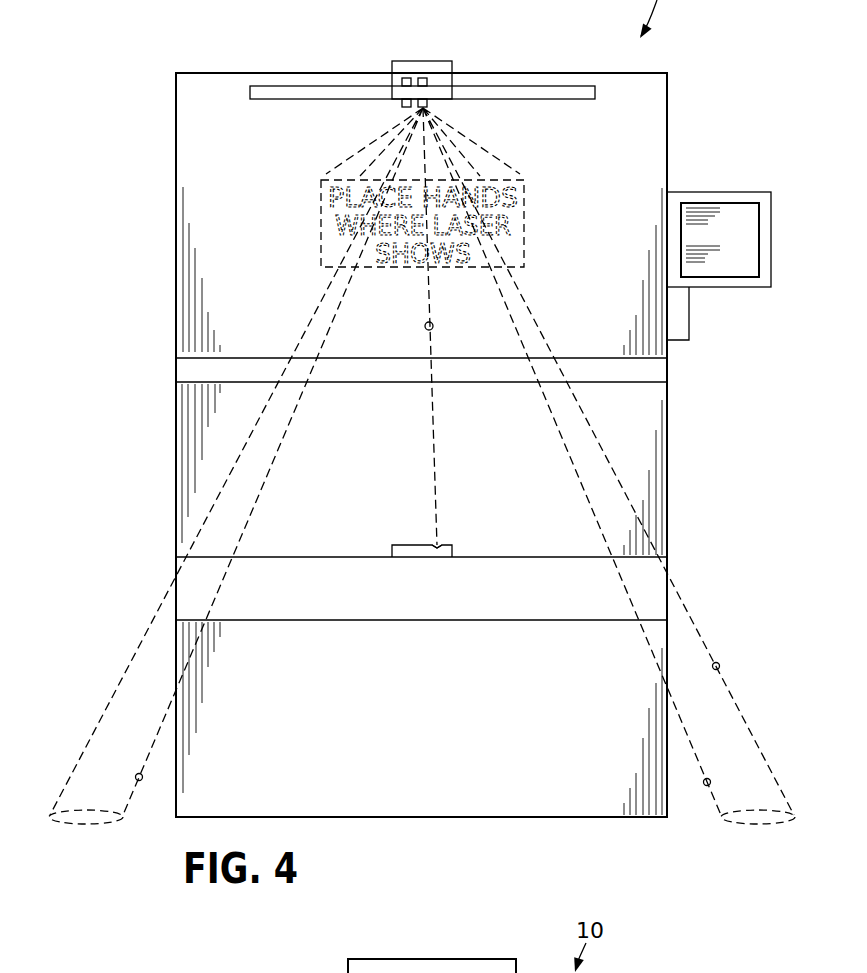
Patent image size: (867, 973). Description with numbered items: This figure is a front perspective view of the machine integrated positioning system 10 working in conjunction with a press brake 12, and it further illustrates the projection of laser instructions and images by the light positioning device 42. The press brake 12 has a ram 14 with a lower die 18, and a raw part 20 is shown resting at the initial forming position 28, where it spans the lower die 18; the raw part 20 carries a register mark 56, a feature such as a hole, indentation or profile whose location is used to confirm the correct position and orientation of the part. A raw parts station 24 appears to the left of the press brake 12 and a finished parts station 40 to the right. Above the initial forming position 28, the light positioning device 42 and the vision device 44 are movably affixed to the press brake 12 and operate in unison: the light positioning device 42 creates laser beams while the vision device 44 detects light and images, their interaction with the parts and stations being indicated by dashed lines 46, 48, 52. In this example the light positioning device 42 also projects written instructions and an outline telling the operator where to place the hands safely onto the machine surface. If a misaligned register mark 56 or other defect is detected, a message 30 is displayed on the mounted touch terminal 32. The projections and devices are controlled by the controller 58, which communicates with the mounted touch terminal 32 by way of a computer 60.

The machine integrated positioning system 10 is at (622, 388).
The press brake 12 is at (668, 82).
The ram 14 is at (176, 167).
The lower die 18 is at (570, 556).
The raw part 20 is at (404, 545).
The raw parts station 24 is at (93, 787).
The initial forming position 28 is at (463, 539).
The message 30 is at (695, 232).
The mounted touch terminal 32 is at (772, 237).
The finished parts station 40 is at (755, 790).
The light positioning device 42 is at (423, 78).
The vision device 44 is at (404, 78).
The dashed line 46 is at (139, 781).
The dashed line 48 is at (434, 326).
The dashed line 52 is at (719, 663).
The register mark 56 is at (440, 545).
The controller 58 is at (690, 313).
The computer 60 is at (772, 198).